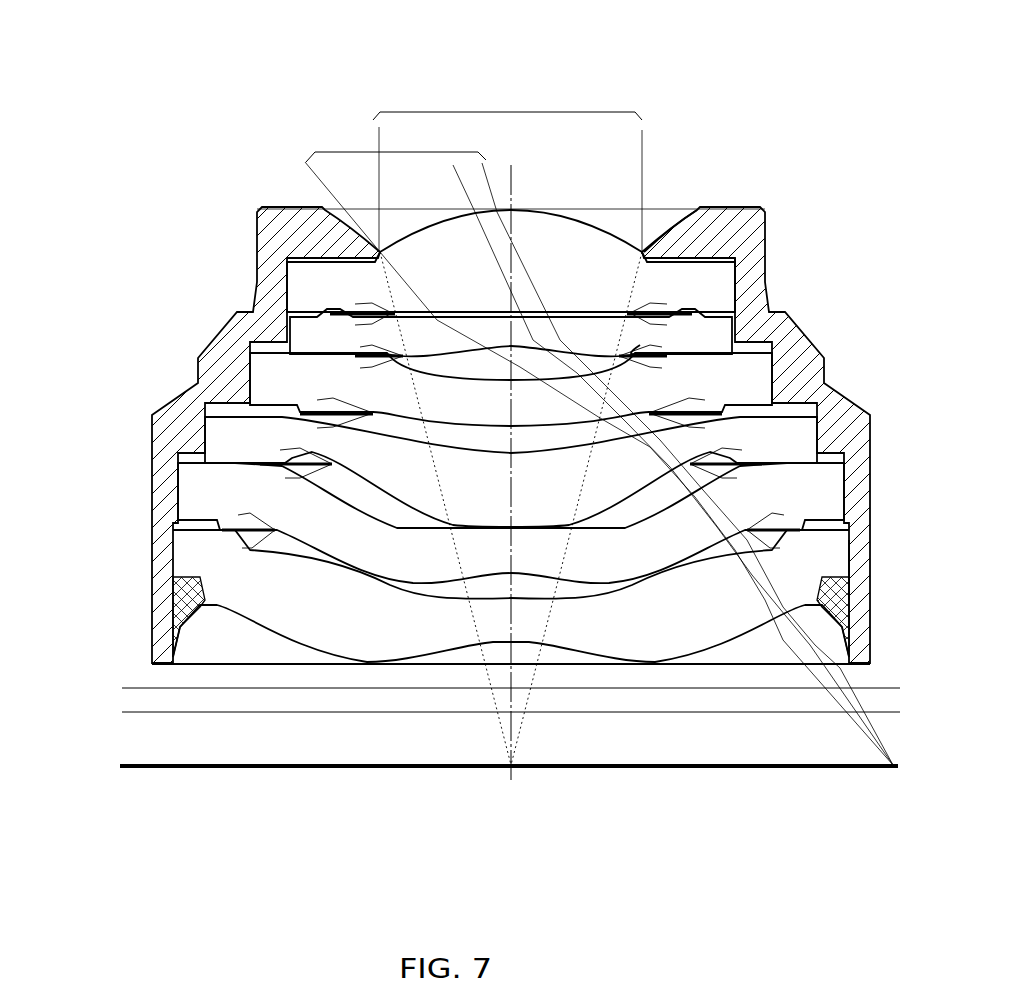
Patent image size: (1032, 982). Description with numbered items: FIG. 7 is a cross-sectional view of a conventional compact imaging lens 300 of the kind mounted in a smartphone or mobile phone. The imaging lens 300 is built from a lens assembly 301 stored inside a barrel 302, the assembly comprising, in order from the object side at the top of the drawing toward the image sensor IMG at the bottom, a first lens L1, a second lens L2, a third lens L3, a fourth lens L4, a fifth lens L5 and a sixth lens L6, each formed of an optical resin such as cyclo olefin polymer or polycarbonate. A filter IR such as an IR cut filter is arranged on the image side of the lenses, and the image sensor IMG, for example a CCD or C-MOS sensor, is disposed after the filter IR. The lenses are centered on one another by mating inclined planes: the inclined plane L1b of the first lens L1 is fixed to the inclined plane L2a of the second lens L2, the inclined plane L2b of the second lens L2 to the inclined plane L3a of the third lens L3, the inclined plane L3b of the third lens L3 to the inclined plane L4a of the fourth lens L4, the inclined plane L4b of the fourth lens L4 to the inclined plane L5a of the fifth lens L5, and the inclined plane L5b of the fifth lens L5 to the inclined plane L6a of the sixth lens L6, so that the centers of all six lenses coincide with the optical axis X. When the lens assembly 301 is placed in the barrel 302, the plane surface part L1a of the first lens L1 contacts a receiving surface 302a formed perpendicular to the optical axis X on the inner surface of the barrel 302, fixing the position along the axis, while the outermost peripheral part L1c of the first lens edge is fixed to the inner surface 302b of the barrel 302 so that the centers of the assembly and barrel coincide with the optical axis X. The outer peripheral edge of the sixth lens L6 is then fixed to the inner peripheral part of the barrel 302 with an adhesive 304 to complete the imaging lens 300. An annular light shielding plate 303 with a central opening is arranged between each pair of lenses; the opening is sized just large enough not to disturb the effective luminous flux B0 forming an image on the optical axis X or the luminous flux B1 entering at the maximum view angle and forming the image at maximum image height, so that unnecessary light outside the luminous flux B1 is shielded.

The imaging lens 300 is at (264, 26).
The lens assembly 301 is at (522, 205).
The barrel 302 is at (713, 210).
The receiving surface 302a is at (713, 248).
The inner surface 302b is at (737, 270).
The light shielding plate 303 is at (372, 313).
The adhesive 304 is at (185, 600).
The first lens L1 is at (511, 261).
The second lens L2 is at (313, 327).
The third lens L3 is at (511, 389).
The fourth lens L4 is at (511, 472).
The fifth lens L5 is at (511, 523).
The sixth lens L6 is at (511, 596).
The plane surface part L1a is at (737, 262).
The inclined plane L1b is at (673, 302).
The outermost peripheral part L1c is at (737, 298).
The inclined plane L2a is at (740, 335).
The inclined plane L2b is at (660, 328).
The inclined plane L3a is at (765, 360).
The inclined plane L3b is at (720, 388).
The inclined plane L4a is at (813, 410).
The inclined plane L4b is at (780, 450).
The inclined plane L5a is at (847, 472).
The inclined plane L5b is at (803, 514).
The inclined plane L6a is at (845, 543).
The optical axis X is at (511, 165).
The luminous flux B0 is at (507, 167).
The luminous flux B1 is at (396, 143).
The filter IR is at (180, 704).
The image sensor IMG is at (175, 763).